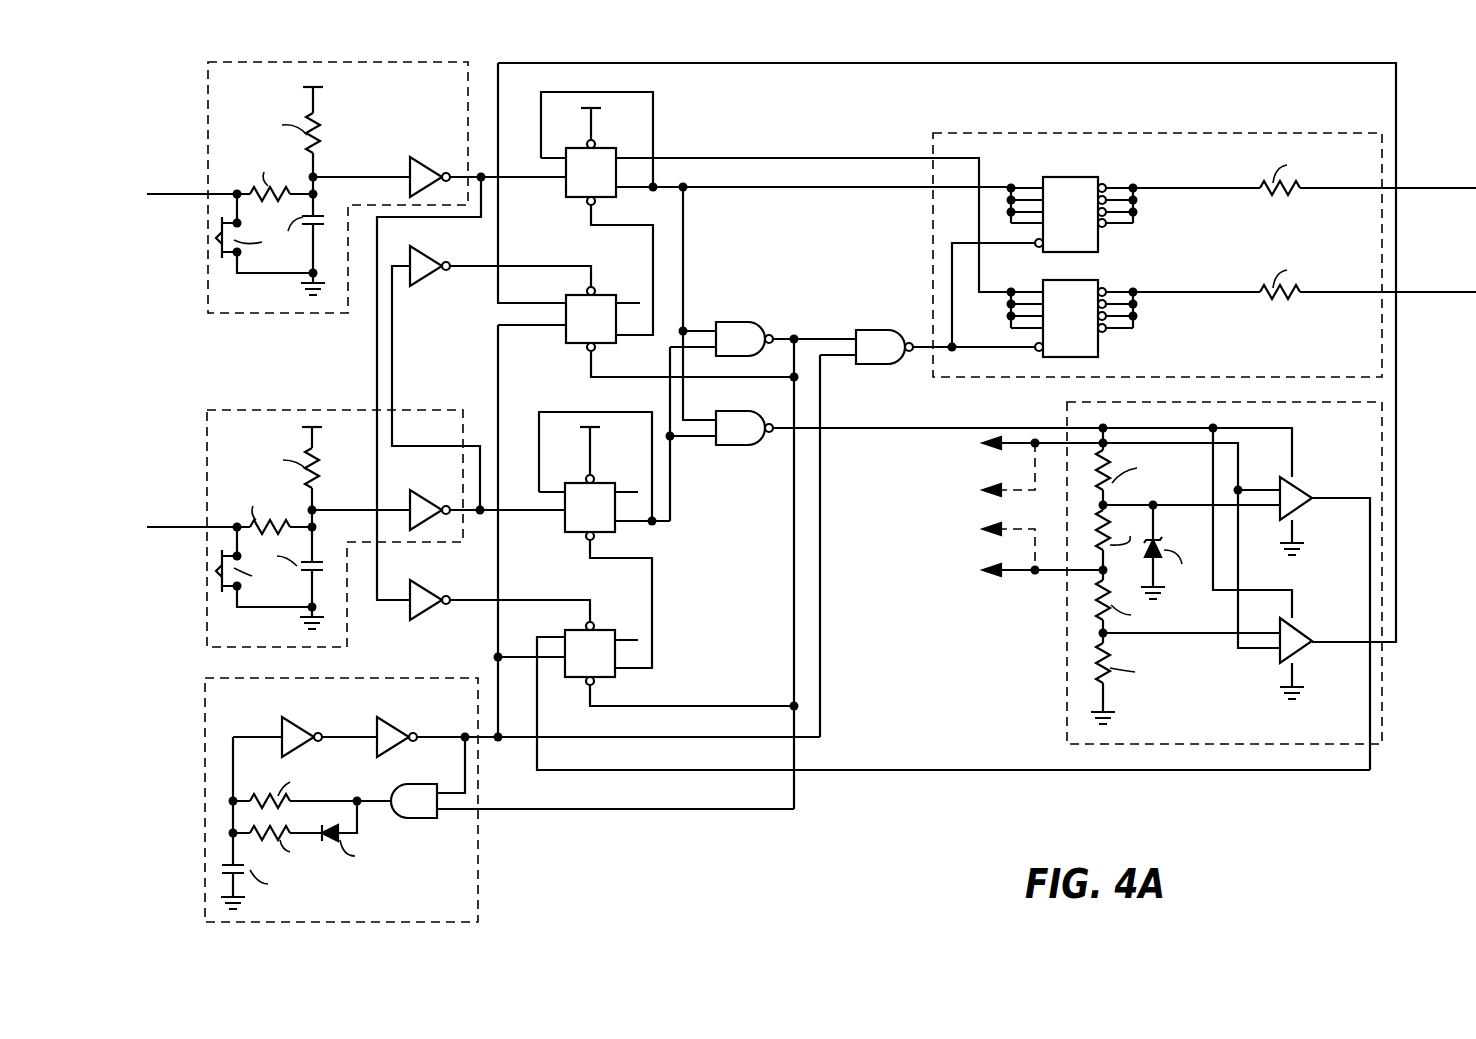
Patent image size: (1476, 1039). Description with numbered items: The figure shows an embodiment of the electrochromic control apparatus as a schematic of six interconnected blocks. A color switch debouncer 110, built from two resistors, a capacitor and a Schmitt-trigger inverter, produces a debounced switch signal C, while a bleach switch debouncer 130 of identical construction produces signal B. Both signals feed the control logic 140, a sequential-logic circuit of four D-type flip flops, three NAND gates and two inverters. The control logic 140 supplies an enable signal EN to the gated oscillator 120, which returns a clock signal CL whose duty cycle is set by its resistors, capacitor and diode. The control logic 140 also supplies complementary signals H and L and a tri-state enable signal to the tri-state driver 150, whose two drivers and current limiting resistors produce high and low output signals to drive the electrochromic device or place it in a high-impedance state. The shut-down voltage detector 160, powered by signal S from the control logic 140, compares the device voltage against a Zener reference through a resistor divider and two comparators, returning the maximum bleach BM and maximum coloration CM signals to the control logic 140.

The color switch debouncer 110 is at (302, 315).
The gated oscillator 120 is at (478, 880).
The bleach switch debouncer 130 is at (266, 409).
The control logic 140 is at (838, 603).
The tri-state driver 150 is at (1175, 132).
The shut-down voltage detector 160 is at (1067, 680).